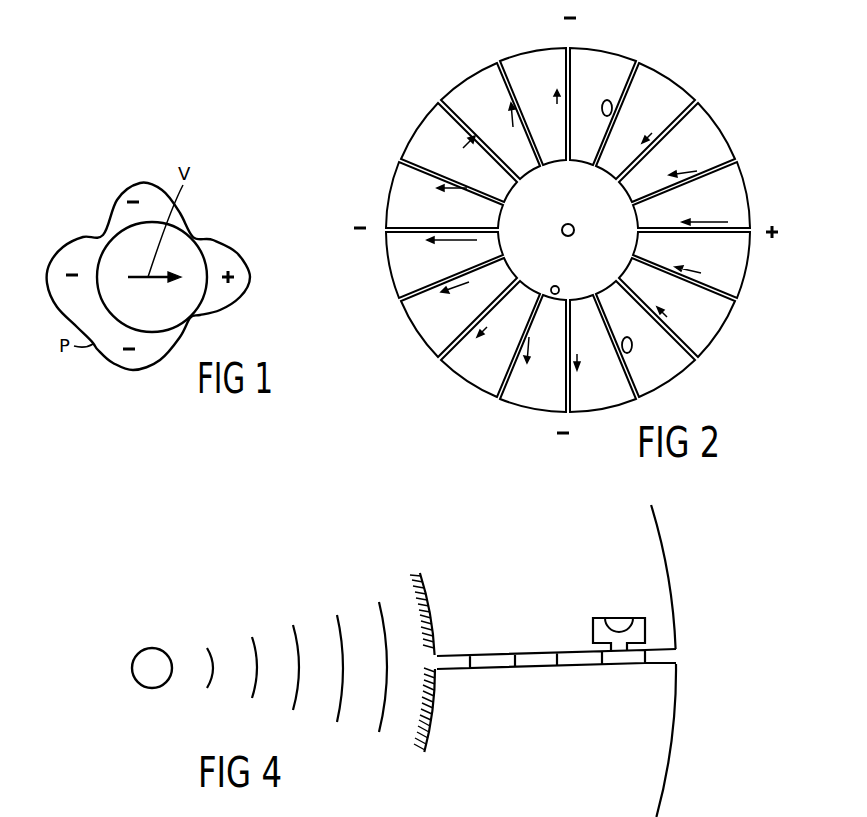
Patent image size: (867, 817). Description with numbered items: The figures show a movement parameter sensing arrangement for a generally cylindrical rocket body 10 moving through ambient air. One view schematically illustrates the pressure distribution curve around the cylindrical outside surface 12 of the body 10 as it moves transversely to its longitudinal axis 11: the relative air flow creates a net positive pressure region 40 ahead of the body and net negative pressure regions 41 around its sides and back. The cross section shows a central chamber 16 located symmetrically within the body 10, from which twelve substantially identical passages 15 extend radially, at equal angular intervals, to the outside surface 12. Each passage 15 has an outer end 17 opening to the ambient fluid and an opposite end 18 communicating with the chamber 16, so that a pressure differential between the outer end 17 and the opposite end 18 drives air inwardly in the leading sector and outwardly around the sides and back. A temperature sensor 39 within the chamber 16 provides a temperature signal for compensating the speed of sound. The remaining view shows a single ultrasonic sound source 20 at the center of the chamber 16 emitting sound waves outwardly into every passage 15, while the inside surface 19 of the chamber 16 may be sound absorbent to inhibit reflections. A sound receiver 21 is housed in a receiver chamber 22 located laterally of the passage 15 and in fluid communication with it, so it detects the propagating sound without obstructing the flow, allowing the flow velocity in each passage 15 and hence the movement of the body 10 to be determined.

In FIG. 1, the body 10 is at (106, 234).
In FIG. 2, the body 10 is at (586, 230).
In FIG. 4, the body 10 is at (694, 661).
In FIG. 2, the longitudinal axis 11 is at (568, 223).
In FIG. 1, the outside surface 12 is at (202, 303).
In FIG. 2, the outside surface 12 is at (584, 230).
In FIG. 4, the outside surface 12 is at (677, 630).
In FIG. 2, the passages 15 is at (723, 233).
In FIG. 4, the passages 15 is at (537, 665).
In FIG. 4, the chamber 16 is at (259, 622).
In FIG. 4, the outer end 17 is at (677, 658).
In FIG. 4, the opposite end 18 is at (433, 662).
In FIG. 4, the inside surface 19 is at (433, 712).
In FIG. 4, the sound source 20 is at (150, 658).
In FIG. 4, the sound receiver 21 is at (614, 622).
In FIG. 4, the receiver chamber 22 is at (593, 632).
In FIG. 2, the temperature sensor 39 is at (555, 286).
In FIG. 1, the net positive pressure region 40 is at (221, 244).
In FIG. 1, the net negative pressure region 41 is at (166, 352).